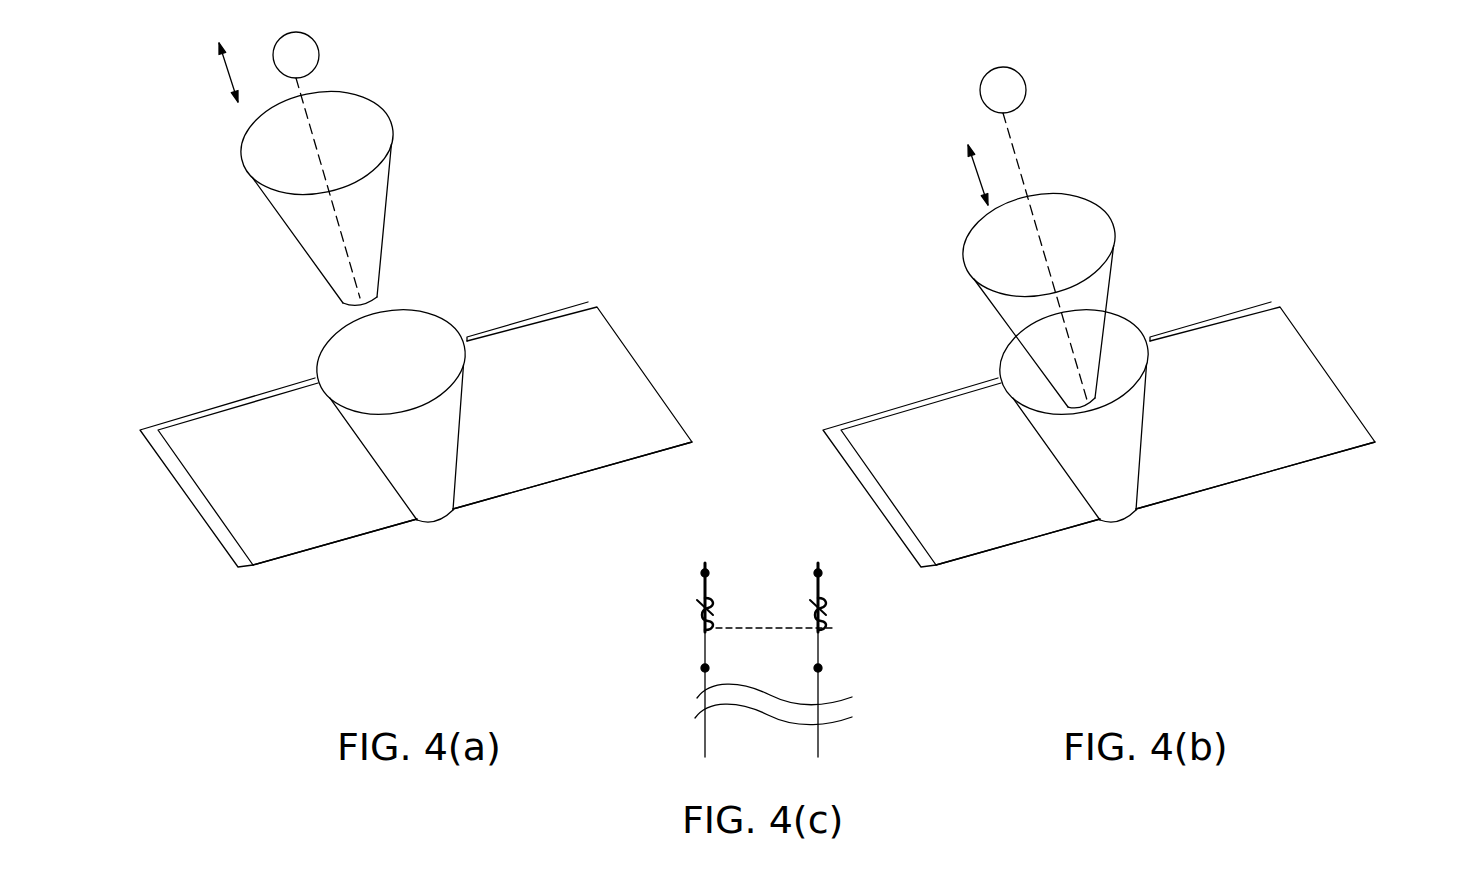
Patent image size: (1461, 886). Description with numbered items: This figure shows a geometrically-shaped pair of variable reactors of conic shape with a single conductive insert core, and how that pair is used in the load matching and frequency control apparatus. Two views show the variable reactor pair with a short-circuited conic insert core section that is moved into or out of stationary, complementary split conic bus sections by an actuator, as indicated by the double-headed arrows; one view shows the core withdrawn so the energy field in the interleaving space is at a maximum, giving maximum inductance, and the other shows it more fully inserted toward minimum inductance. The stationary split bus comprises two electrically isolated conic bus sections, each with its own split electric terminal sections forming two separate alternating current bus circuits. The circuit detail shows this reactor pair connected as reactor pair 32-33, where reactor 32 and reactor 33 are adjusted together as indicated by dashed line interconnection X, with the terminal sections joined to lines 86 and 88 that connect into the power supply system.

The variable reactor 32 is at (735, 612).
The variable reactor 33 is at (848, 616).
The dashed line interconnection X is at (770, 627).
The first lead line 86 is at (704, 673).
The second lead line 88 is at (819, 673).